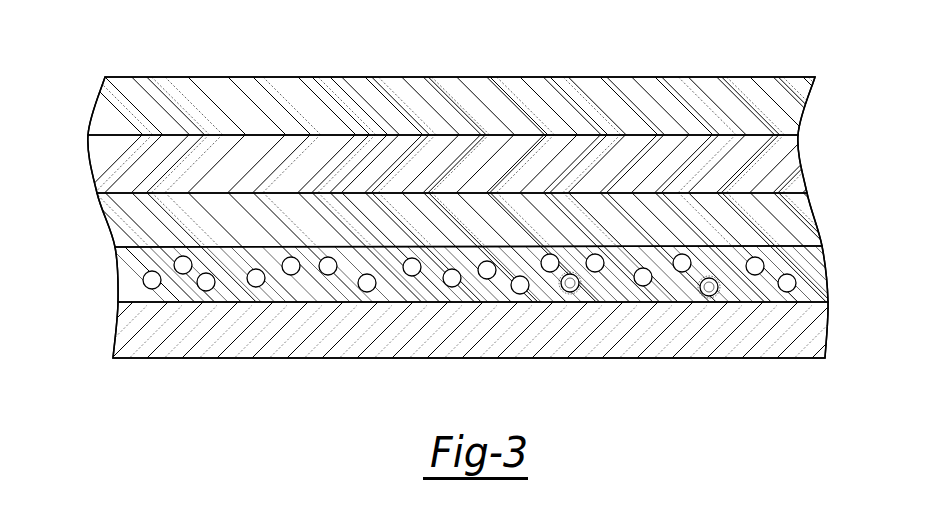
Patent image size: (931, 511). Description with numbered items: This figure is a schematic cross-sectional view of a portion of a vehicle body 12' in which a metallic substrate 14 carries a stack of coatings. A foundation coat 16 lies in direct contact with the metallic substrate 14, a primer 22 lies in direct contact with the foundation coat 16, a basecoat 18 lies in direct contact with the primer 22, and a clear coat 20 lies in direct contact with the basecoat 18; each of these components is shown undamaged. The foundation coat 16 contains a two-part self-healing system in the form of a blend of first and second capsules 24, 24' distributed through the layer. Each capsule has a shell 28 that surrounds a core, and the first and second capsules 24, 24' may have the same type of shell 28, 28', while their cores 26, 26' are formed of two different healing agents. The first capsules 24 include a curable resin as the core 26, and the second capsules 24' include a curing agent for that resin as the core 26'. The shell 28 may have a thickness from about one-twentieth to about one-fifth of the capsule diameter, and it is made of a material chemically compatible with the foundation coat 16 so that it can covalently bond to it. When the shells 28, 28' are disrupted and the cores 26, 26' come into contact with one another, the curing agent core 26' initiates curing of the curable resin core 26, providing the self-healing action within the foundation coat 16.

The vehicle body 12' is at (426, 192).
The metallic substrate 14 is at (133, 332).
The foundation coat 16 is at (812, 277).
The basecoat 18 is at (110, 167).
The clear coat 20 is at (768, 110).
The primer 22 is at (790, 222).
The first capsules 24 is at (707, 348).
The second capsules 24' is at (565, 343).
The core 26 is at (739, 303).
The core 26' is at (599, 305).
The shell 28 is at (696, 311).
The shell 28' is at (547, 304).